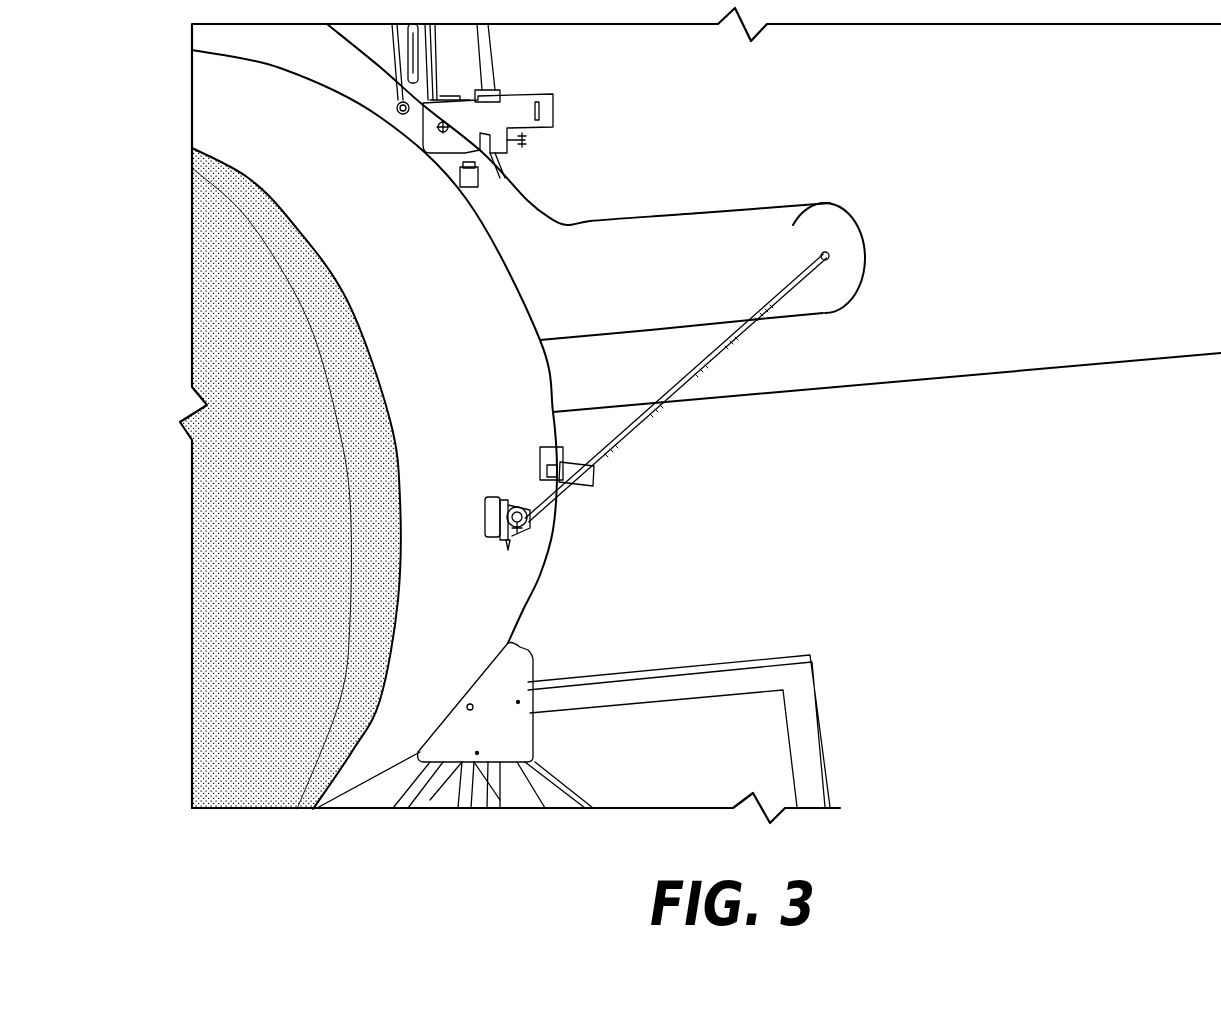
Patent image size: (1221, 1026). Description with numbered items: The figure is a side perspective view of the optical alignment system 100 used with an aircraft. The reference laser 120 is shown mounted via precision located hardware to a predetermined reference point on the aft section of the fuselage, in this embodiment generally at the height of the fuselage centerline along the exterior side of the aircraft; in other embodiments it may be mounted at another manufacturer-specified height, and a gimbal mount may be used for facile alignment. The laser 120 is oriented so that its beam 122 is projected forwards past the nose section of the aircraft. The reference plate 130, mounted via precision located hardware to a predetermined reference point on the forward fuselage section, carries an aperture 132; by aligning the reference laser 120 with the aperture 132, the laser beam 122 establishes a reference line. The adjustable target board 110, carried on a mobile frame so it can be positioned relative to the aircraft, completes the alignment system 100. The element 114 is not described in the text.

The optical alignment system 100 is at (152, 160).
The adjustable target board 110 is at (830, 203).
The pin 114 is at (825, 256).
The reference laser 120 is at (487, 507).
The laser beam 122 is at (697, 372).
The reference plate 130 is at (540, 447).
The aperture 132 is at (540, 458).